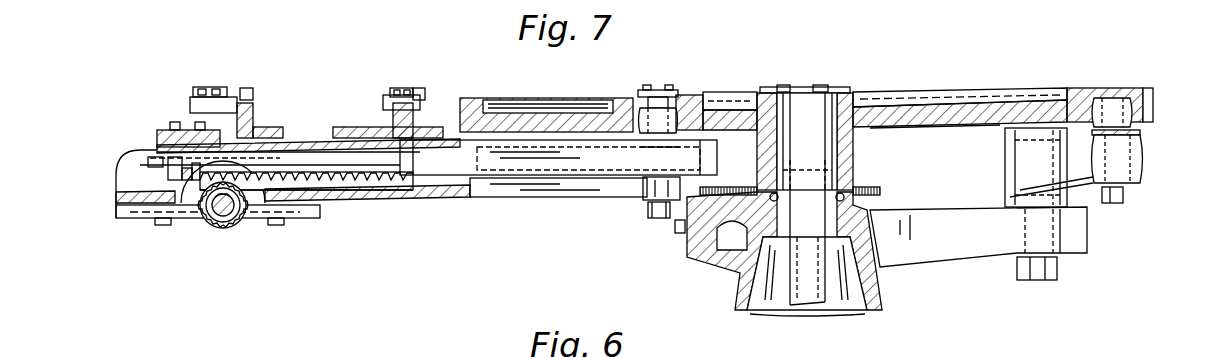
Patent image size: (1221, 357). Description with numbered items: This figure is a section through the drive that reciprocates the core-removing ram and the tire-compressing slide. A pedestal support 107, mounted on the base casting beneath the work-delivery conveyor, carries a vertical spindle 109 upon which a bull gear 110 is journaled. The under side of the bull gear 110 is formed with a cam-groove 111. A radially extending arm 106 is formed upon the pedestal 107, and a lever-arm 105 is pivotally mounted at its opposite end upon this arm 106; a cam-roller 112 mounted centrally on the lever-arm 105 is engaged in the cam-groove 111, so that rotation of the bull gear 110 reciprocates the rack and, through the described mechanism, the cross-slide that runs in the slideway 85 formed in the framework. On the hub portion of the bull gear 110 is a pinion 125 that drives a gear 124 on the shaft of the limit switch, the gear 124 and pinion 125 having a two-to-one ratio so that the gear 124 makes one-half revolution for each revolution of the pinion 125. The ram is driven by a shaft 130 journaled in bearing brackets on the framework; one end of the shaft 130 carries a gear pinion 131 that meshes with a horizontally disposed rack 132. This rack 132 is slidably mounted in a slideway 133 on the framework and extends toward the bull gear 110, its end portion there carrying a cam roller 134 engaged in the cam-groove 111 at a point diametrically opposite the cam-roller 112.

The slideway 85 is at (257, 117).
The lever-arm 105 is at (1143, 165).
The radially extending arm 106 is at (980, 252).
The pedestal support 107 is at (880, 295).
The vertical spindle 109 is at (793, 294).
The bull gear 110 is at (1120, 95).
The cam-groove 111 is at (1100, 97).
The cam-roller 112 is at (1153, 108).
The gear 124 is at (738, 190).
The pinion 125 is at (860, 188).
The shaft 130 is at (212, 224).
The gear pinion 131 is at (238, 222).
The rack 132 is at (342, 188).
The slideway 133 is at (438, 196).
The cam roller 134 is at (648, 108).